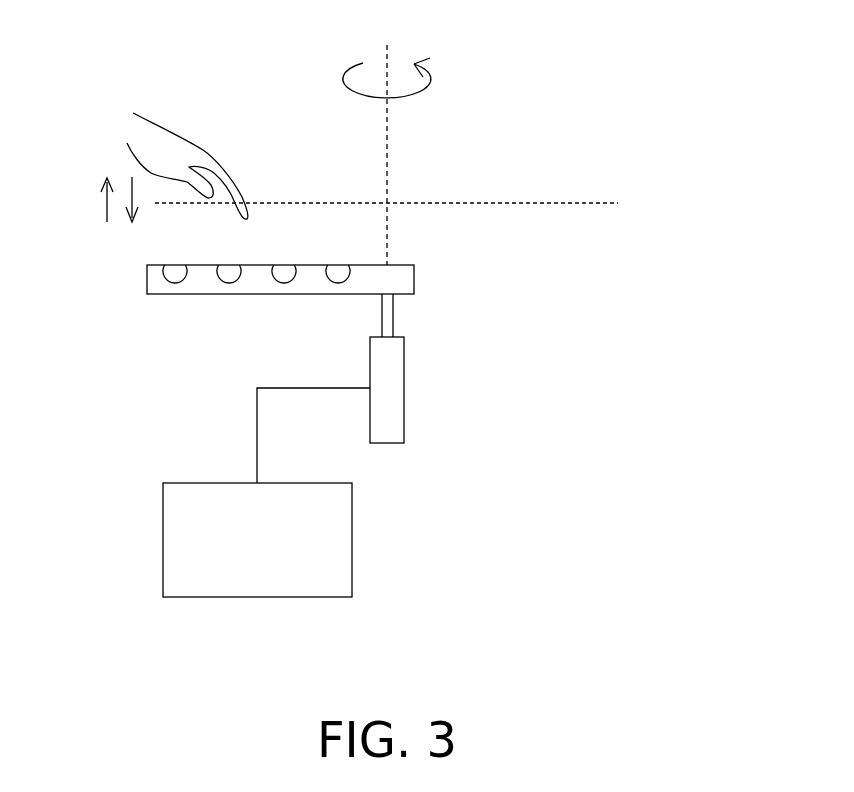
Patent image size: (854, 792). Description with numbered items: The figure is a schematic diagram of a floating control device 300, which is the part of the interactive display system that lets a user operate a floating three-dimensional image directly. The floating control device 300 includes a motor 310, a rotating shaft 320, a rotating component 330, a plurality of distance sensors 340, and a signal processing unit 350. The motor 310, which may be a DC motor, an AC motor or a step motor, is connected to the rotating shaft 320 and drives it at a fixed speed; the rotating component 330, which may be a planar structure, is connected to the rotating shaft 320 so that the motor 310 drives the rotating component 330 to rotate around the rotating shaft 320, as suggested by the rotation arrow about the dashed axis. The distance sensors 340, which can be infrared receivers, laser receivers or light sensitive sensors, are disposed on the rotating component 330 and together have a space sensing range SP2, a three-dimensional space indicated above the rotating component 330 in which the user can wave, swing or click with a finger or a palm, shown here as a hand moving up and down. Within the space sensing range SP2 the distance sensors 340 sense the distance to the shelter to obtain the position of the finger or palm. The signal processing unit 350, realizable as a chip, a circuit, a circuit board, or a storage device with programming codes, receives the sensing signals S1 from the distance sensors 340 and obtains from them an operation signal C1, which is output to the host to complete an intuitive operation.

The floating control device 300 is at (703, 30).
The motor 310 is at (404, 388).
The rotating shaft 320 is at (393, 313).
The rotating component 330 is at (147, 273).
The distance sensors 340 is at (283, 264).
The signal processing unit 350 is at (278, 585).
The sensing signals S1 is at (204, 466).
The operation signal C1 is at (257, 597).
The space sensing range SP2 is at (531, 222).